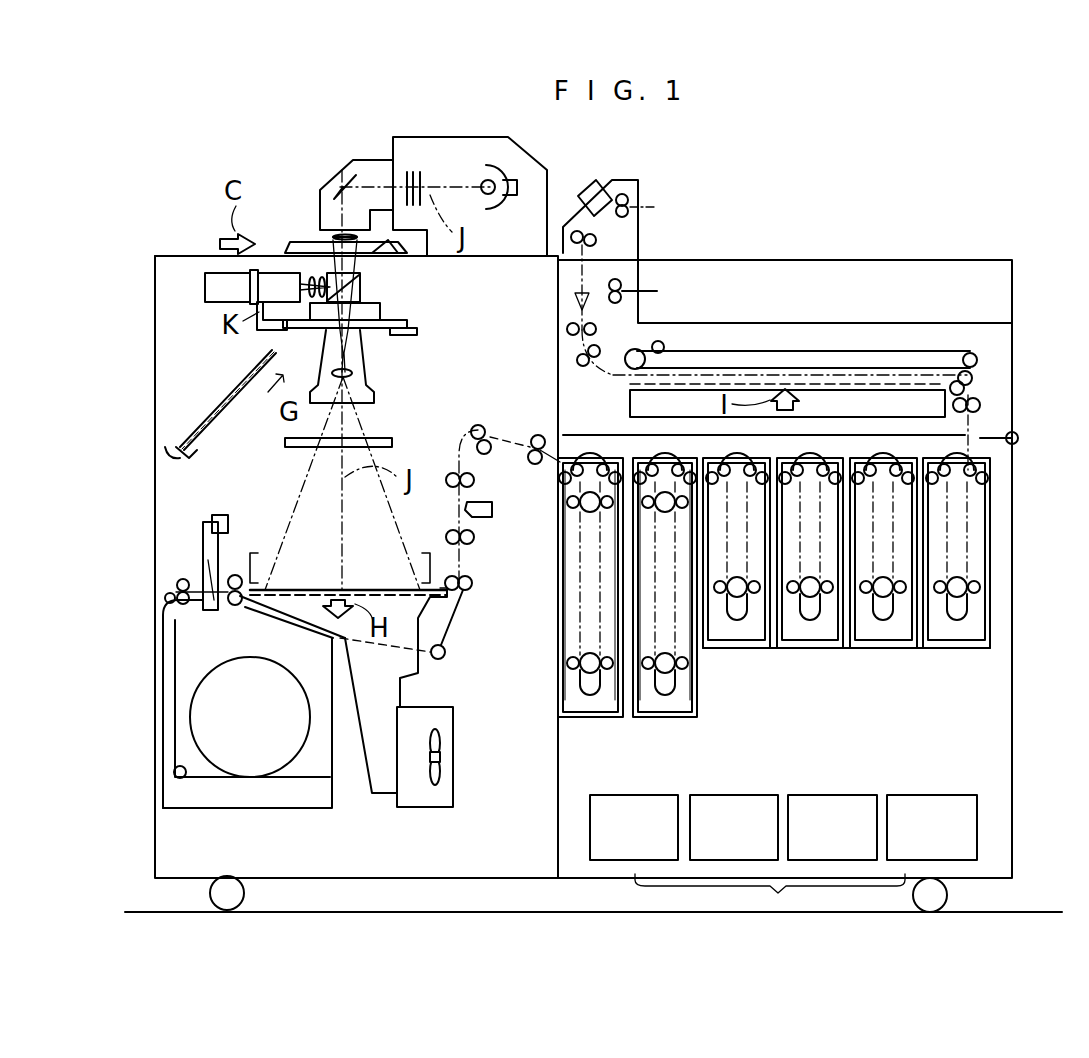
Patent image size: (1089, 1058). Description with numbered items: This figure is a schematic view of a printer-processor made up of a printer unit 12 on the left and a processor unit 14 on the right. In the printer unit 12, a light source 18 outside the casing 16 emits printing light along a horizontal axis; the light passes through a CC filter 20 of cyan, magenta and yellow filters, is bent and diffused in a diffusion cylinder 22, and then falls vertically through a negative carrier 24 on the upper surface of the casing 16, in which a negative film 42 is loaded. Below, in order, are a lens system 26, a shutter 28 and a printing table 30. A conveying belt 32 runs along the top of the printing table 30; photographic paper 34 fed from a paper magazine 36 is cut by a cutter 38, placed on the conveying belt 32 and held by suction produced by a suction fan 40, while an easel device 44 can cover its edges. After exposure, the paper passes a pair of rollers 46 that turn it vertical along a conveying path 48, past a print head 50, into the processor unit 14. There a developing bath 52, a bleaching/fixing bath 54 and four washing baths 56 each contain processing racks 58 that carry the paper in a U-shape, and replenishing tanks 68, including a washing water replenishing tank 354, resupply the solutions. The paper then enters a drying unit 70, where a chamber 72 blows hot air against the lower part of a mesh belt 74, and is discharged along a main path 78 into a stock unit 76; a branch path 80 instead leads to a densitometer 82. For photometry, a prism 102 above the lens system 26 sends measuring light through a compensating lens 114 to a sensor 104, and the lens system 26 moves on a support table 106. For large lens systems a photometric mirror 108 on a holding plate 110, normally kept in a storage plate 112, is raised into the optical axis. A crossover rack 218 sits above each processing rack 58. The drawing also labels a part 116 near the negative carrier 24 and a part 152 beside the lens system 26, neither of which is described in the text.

The printer unit 12 is at (155, 318).
The processor unit 14 is at (957, 258).
The casing 16 is at (178, 255).
The light source 18 is at (487, 196).
The CC filter 20 is at (418, 187).
The diffusion cylinder 22 is at (323, 187).
The negative carrier 24 is at (318, 245).
The lens system 26 is at (365, 345).
The shutter 28 is at (384, 437).
The printing table 30 is at (356, 588).
The conveying belt 32 is at (237, 577).
The photographic paper 34 is at (300, 586).
The paper magazine 36 is at (287, 808).
The cutter 38 is at (218, 577).
The suction fan 40 is at (427, 777).
The negative film 42 is at (356, 232).
The easel device 44 is at (428, 568).
The pair of rollers 46 is at (468, 584).
The conveying path 48 is at (507, 425).
The print head 50 is at (485, 518).
The developing bath 52 is at (573, 717).
The bleaching/fixing bath 54 is at (680, 717).
The washing baths 56 is at (722, 648).
The processing racks 58 is at (793, 642).
The replenishing tanks 68 is at (783, 829).
The drying unit 70 is at (982, 392).
The chamber 72 is at (630, 396).
The mesh belt 74 is at (818, 375).
The stock unit 76 is at (728, 323).
The main path 78 is at (622, 293).
The branch path 80 is at (630, 213).
The densitometer 82 is at (588, 195).
The prism 102 is at (310, 280).
The sensor 104 is at (223, 302).
The support table 106 is at (400, 336).
The photometric mirror 108 is at (263, 353).
The holding plate 110 is at (213, 430).
The storage plate 112 is at (180, 460).
The compensating lens 114 is at (250, 272).
The polygon mirror 116 is at (385, 253).
The mount 152 is at (370, 282).
The crossover rack 218 is at (557, 443).
The washing water replenishing tank 354 is at (922, 813).